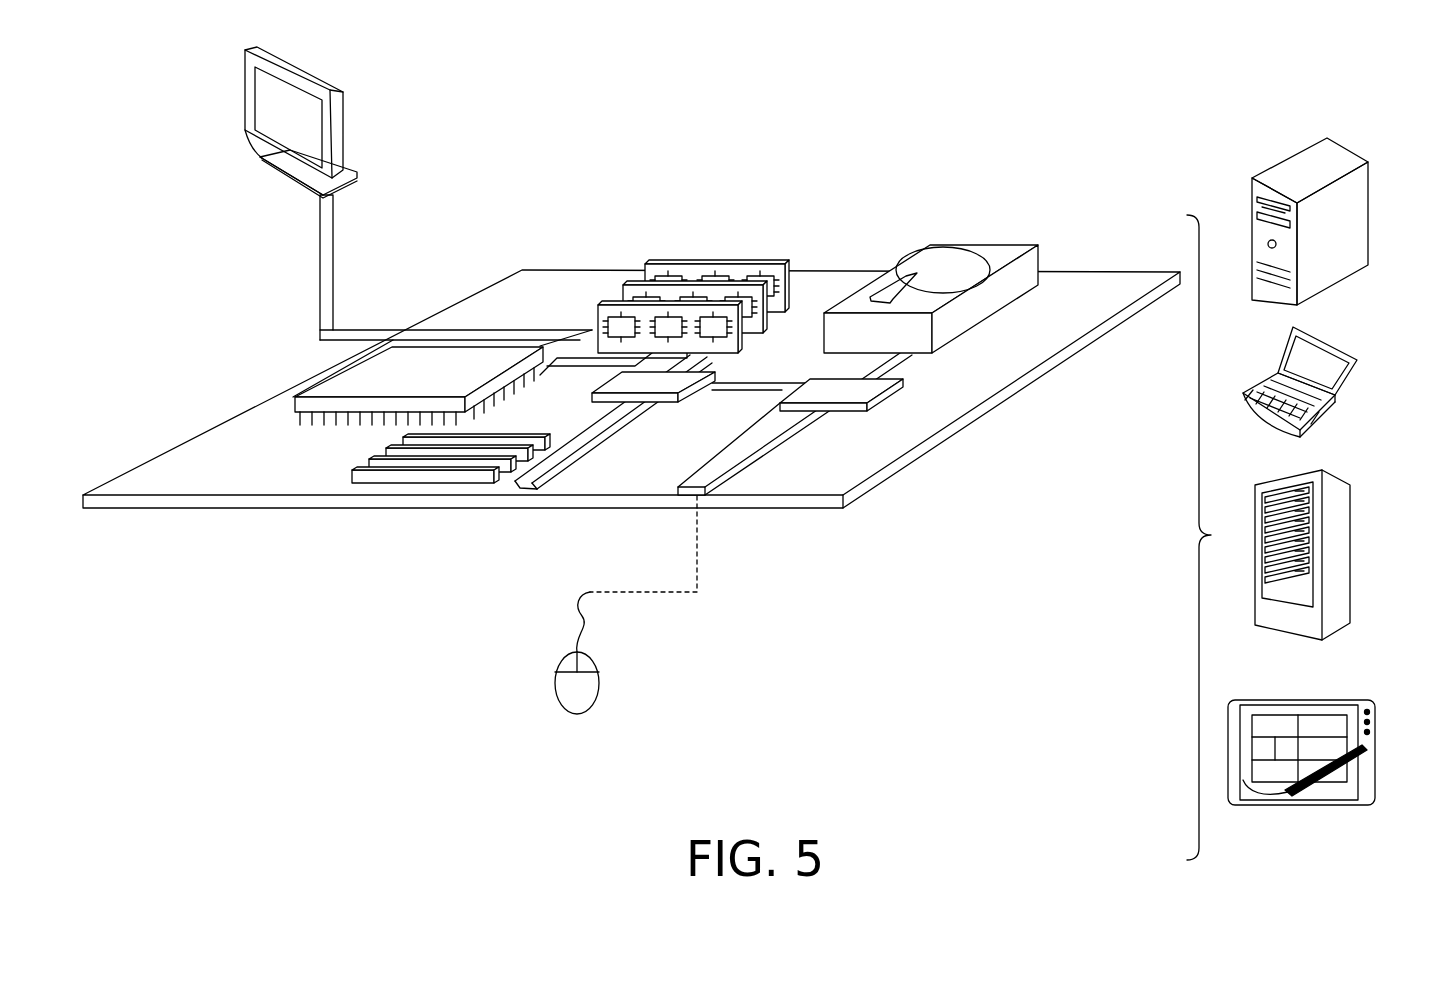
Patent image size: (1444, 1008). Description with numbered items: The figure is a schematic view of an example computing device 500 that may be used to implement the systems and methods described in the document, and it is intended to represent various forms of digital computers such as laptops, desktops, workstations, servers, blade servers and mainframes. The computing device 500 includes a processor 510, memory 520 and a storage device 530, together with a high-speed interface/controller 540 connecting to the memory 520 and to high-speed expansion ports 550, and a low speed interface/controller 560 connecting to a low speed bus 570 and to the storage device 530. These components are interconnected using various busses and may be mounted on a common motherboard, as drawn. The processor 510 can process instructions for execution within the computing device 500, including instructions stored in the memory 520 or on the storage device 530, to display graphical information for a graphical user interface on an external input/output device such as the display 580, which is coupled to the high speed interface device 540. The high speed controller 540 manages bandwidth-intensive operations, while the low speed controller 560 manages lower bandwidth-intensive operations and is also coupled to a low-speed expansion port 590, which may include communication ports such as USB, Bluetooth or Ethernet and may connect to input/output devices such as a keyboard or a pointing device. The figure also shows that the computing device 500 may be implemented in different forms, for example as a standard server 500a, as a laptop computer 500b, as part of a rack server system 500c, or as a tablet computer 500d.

The computing device 500 is at (797, 119).
The processor 510 is at (295, 398).
The memory 520 is at (721, 262).
The storage device 530 is at (980, 243).
The high-speed interface/controller 540 is at (664, 405).
The high-speed expansion ports 550 is at (353, 473).
The low speed interface/controller 560 is at (833, 382).
The low speed bus 570 is at (782, 451).
The display 580 is at (245, 100).
The low-speed expansion port 590 is at (710, 497).
The standard server 500a is at (1282, 158).
The laptop computer 500b is at (1335, 343).
The rack server system 500c is at (1346, 538).
The tablet computer 500d is at (1352, 692).